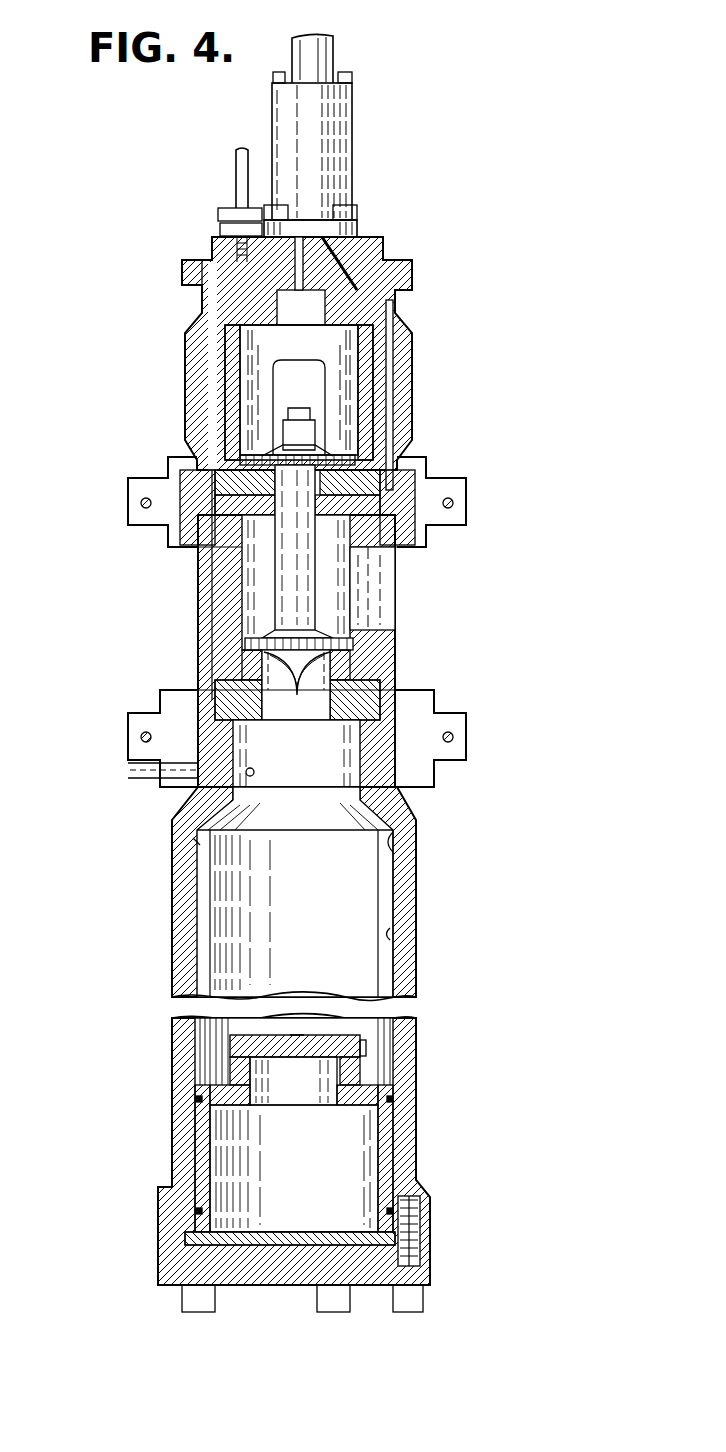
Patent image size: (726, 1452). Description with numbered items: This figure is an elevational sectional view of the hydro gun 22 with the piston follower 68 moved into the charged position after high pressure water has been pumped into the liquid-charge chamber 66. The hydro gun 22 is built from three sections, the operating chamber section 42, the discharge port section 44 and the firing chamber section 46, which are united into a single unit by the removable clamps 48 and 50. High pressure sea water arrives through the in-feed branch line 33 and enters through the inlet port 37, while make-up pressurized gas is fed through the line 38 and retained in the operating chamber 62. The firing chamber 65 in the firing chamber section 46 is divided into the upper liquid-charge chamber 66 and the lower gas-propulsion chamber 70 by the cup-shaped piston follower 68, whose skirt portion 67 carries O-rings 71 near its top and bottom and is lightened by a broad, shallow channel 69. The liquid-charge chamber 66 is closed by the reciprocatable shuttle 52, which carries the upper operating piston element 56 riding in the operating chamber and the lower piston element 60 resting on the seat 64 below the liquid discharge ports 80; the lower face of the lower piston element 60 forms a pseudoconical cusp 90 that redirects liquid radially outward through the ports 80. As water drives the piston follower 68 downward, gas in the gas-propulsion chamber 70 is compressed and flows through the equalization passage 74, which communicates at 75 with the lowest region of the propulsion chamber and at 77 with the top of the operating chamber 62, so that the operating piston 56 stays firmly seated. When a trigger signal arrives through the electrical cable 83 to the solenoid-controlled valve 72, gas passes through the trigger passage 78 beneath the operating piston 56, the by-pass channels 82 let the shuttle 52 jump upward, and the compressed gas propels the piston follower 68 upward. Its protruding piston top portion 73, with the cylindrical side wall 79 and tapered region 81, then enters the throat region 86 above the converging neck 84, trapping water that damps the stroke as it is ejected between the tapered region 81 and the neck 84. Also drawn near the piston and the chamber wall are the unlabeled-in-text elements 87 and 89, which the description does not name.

The hydro gun 22 is at (108, 321).
The in-feed branch line 33 is at (149, 789).
The inlet port 37 is at (255, 772).
The line 38 is at (235, 180).
The operating chamber section 42 is at (178, 365).
The discharge port section 44 is at (183, 618).
The firing chamber section 46 is at (108, 988).
The removable clamp 48 is at (468, 503).
The removable clamp 50 is at (468, 722).
The reciprocatable shuttle 52 is at (268, 588).
The upper operating piston element 56 is at (342, 462).
The lower piston element 60 is at (335, 640).
The operating chamber 62 is at (322, 357).
The seat 64 is at (355, 653).
The firing chamber 65 is at (395, 932).
The liquid-charge chamber 66 is at (322, 914).
The skirt portion 67 is at (205, 1182).
The piston follower 68 is at (372, 1085).
The channel 69 is at (205, 1137).
The gas-propulsion chamber 70 is at (316, 1172).
The O-ring 71 is at (398, 1104).
The solenoid-controlled valve 72 is at (352, 150).
The piston top portion 73 is at (330, 1035).
The equalization passage 74 is at (205, 410).
The passage communication point 75 is at (190, 1237).
The passage communication point 77 is at (212, 302).
The trigger passage 78 is at (392, 404).
The cylindrical side wall 79 is at (230, 1060).
The liquid discharge port 80 is at (385, 630).
The tapered region 81 is at (230, 1032).
The by-pass channel 82 is at (312, 370).
The electrical cable 83 is at (333, 60).
The converging neck 84 is at (362, 808).
The throat region 86 is at (358, 778).
The piston ring 87 is at (385, 1075).
The seal 89 is at (398, 848).
The cusp 90 is at (296, 685).